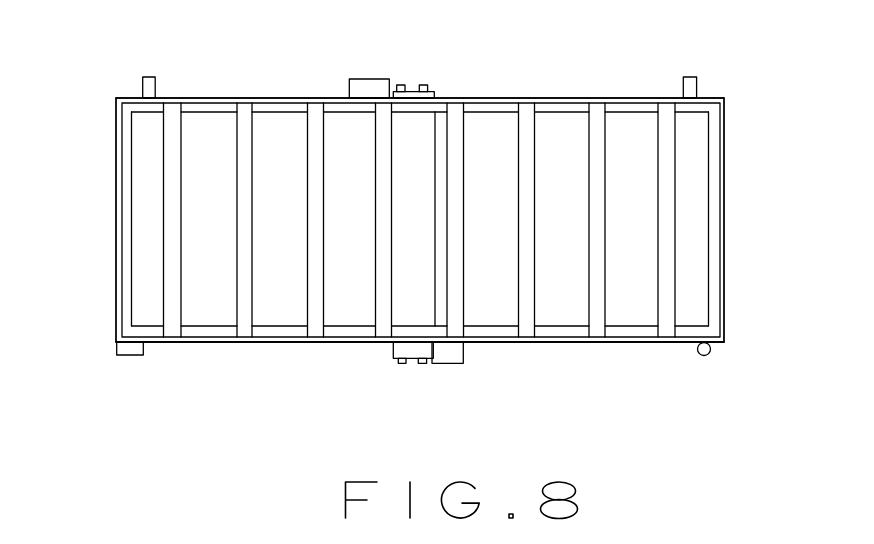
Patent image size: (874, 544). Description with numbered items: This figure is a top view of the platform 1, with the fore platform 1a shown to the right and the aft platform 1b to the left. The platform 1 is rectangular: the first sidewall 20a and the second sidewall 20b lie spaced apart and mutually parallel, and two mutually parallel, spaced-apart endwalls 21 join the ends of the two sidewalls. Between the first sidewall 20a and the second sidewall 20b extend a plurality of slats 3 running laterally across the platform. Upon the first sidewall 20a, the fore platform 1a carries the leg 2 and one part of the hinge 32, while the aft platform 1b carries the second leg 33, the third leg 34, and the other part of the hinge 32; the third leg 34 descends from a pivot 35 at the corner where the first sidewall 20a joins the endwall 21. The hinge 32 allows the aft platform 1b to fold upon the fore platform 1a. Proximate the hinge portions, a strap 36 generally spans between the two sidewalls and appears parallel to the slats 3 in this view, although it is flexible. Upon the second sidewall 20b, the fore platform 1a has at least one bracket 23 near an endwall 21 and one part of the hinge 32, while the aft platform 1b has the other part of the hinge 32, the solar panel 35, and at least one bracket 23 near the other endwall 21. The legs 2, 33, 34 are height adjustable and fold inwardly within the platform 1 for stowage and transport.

The platform 1 is at (723, 157).
The fore platform 1a is at (625, 342).
The aft platform 1b is at (285, 343).
The leg 2 is at (704, 356).
The slats 3 is at (670, 225).
The first sidewall 20a is at (498, 343).
The second sidewall 20b is at (218, 100).
The endwall 21 is at (116, 212).
The bracket 23 is at (150, 85).
The hinge 32 is at (412, 88).
The second leg 33 is at (452, 363).
The third leg 34 is at (133, 355).
The solar panel 35 is at (366, 79).
The strap 36 is at (437, 137).